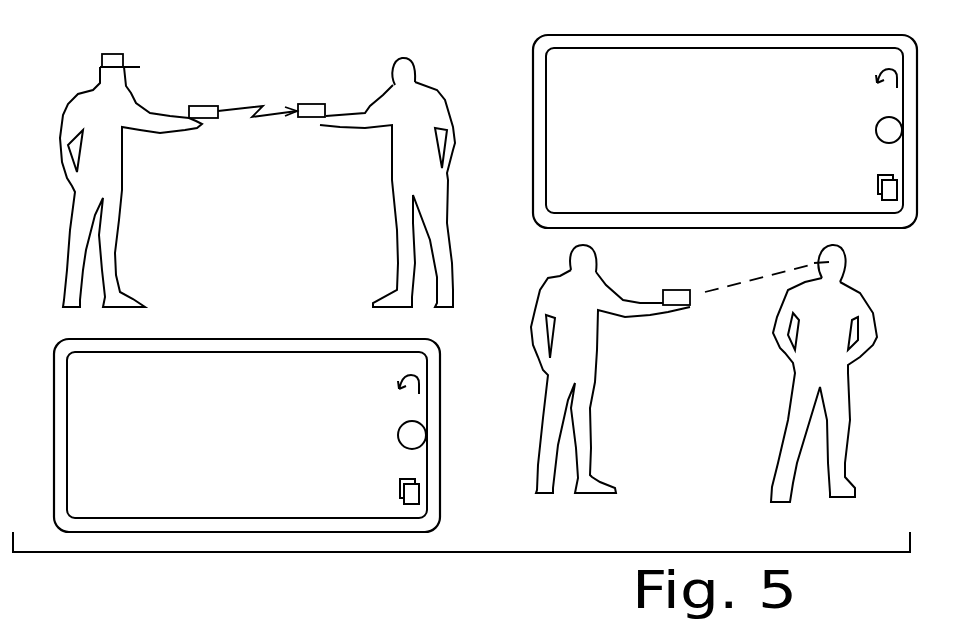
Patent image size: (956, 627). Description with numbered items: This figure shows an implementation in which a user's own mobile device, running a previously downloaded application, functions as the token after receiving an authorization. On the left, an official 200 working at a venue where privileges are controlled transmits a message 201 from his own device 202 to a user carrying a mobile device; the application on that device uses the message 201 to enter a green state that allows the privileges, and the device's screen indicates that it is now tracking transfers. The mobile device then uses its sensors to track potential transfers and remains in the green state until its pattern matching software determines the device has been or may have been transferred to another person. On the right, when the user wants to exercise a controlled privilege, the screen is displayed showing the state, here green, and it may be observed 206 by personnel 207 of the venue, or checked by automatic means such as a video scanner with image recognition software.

The official 200 is at (87, 85).
The message 201 is at (266, 117).
The official's device 202 is at (204, 105).
The observation 206 is at (758, 278).
The personnel 207 is at (867, 307).